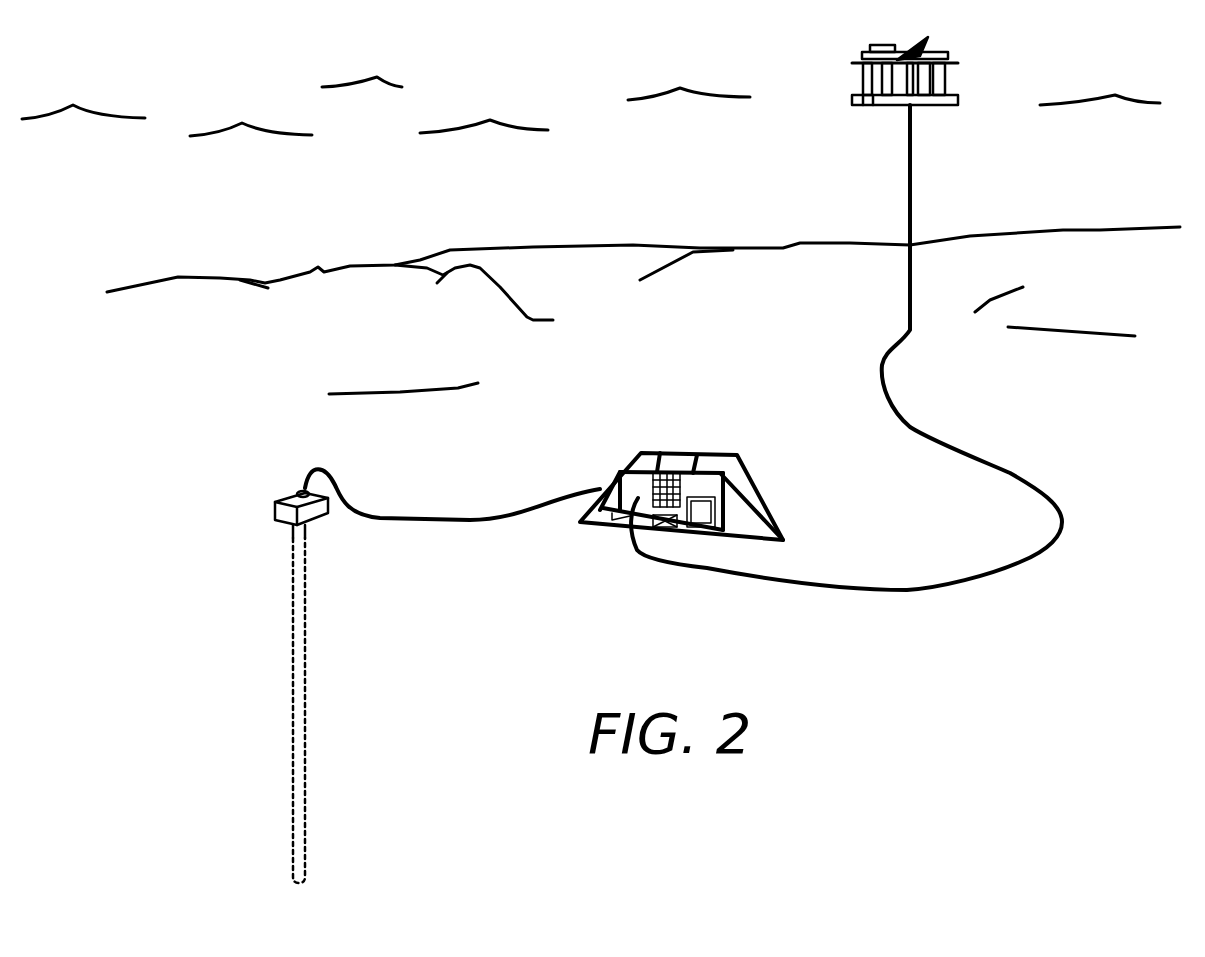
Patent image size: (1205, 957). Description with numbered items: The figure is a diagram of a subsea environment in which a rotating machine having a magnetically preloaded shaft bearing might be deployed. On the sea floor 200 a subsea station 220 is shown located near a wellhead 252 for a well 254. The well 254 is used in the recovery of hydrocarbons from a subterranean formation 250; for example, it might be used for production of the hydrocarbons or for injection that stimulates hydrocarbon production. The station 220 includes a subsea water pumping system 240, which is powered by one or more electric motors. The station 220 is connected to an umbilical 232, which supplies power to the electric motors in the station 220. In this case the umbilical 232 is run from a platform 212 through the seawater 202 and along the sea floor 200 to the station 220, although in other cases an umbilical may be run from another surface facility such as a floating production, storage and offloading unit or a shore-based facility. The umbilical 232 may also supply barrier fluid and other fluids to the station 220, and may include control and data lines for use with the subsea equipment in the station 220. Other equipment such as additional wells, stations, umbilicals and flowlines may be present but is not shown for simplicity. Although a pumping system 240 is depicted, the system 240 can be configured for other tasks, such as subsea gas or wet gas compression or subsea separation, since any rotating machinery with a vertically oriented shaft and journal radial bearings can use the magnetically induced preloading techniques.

The sea floor 200 is at (1036, 420).
The seawater 202 is at (753, 203).
The platform 212 is at (940, 78).
The subsea station 220 is at (668, 428).
The umbilical 232 is at (868, 590).
The subsea water pumping system 240 is at (612, 513).
The subterranean formation 250 is at (256, 704).
The wellhead 252 is at (282, 512).
The well 254 is at (296, 650).